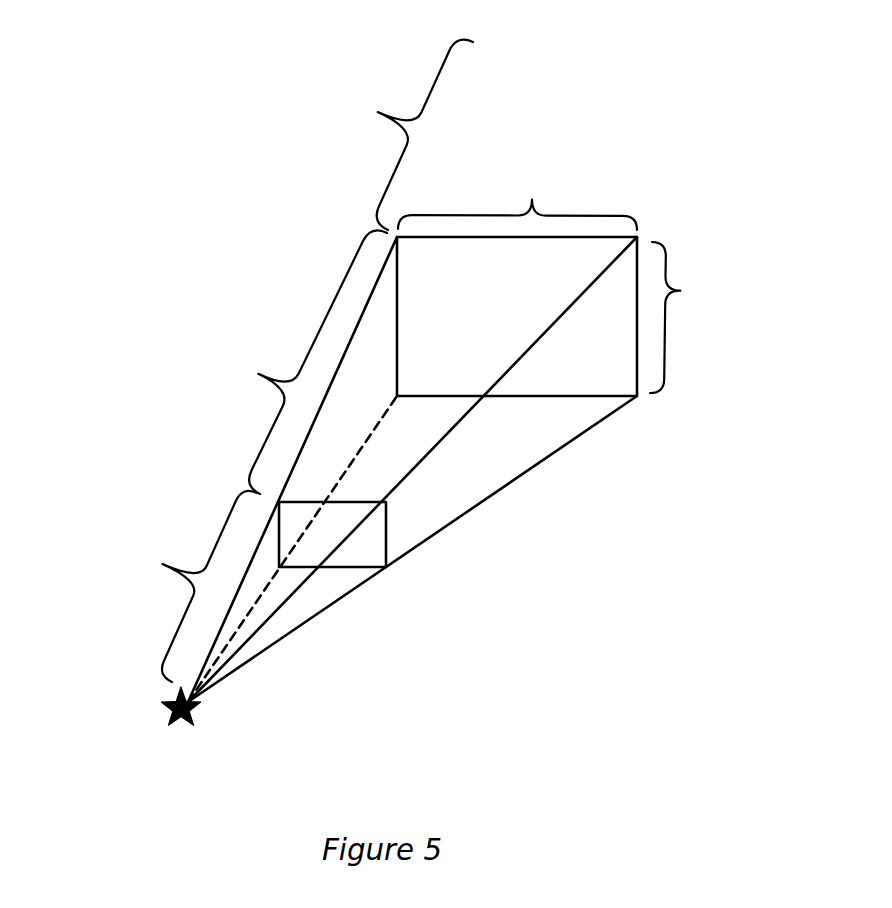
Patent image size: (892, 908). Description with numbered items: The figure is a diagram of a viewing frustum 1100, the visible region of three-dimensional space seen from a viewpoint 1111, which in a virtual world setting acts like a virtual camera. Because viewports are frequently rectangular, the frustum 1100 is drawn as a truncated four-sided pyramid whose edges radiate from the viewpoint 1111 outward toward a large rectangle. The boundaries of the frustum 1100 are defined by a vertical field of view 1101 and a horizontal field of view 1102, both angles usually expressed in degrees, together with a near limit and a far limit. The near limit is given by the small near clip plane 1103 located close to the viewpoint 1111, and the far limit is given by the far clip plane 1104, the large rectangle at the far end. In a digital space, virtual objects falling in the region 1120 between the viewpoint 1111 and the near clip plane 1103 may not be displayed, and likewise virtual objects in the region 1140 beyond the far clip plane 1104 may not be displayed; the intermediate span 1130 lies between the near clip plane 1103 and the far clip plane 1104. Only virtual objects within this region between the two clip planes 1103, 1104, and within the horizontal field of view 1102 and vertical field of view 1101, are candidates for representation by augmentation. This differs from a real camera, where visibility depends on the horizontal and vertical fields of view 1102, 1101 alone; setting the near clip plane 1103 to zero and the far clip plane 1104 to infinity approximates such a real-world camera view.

The viewing frustum 1100 is at (612, 553).
The vertical field of view 1101 is at (692, 317).
The horizontal field of view 1102 is at (517, 195).
The near clip plane 1103 is at (386, 533).
The far clip plane 1104 is at (637, 396).
The viewpoint 1111 is at (198, 714).
The region between the viewpoint and the near clip plane 1120 is at (176, 586).
The second distance segment 1130 is at (285, 362).
The region beyond the far clip plane 1140 is at (397, 135).